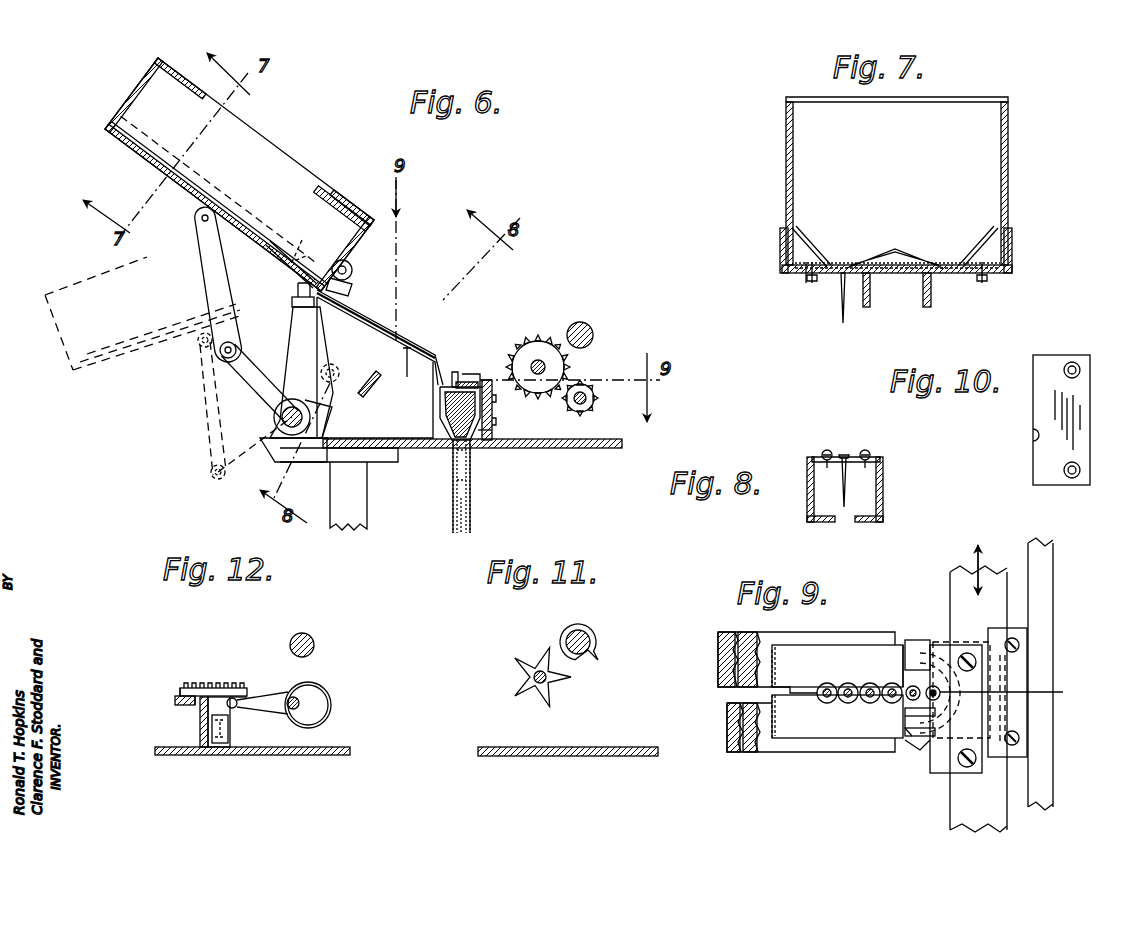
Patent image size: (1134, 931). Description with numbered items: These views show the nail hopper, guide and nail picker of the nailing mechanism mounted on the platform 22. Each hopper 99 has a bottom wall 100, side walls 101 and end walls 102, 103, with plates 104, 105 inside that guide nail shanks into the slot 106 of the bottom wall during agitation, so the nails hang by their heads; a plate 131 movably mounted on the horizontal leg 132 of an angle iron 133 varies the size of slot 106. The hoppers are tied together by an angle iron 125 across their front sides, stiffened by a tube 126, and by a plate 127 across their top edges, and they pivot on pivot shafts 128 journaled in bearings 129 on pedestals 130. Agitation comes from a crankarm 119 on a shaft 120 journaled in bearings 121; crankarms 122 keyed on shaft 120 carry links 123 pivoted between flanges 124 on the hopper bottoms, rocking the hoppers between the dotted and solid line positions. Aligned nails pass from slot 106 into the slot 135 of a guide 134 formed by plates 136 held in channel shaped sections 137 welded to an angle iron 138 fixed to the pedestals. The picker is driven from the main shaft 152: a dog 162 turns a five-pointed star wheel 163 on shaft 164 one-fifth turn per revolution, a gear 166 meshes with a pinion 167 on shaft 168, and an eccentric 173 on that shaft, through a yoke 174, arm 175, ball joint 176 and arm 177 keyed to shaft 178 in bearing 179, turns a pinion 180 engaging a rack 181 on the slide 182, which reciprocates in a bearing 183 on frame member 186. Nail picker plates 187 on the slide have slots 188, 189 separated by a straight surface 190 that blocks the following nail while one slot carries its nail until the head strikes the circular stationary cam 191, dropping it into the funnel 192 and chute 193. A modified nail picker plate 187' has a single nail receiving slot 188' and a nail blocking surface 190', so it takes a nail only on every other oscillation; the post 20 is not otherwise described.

In FIG. 6, the post 20 is at (367, 505).
In FIG. 6, the platform 22 is at (612, 448).
In FIG. 12, the platform 22 is at (334, 755).
In FIG. 11, the platform 22 is at (560, 756).
In FIG. 6, the hopper 99 is at (305, 150).
In FIG. 7, the hopper 99 is at (1010, 188).
In FIG. 7, the bottom wall 100 is at (935, 278).
In FIG. 7, the side walls 101 is at (786, 168).
In FIG. 6, the end wall 102 is at (350, 226).
In FIG. 6, the end wall 103 is at (137, 88).
In FIG. 7, the plate 104 is at (896, 248).
In FIG. 7, the plate 105 is at (820, 246).
In FIG. 7, the slot 106 is at (838, 275).
In FIG. 6, the crankarm 119 is at (316, 378).
In FIG. 6, the shaft 120 is at (272, 415).
In FIG. 6, the bearings 121 is at (332, 420).
In FIG. 6, the crankarm 122 is at (228, 360).
In FIG. 6, the link 123 is at (203, 262).
In FIG. 6, the flanges 124 is at (118, 135).
In FIG. 7, the flanges 124 is at (870, 307).
In FIG. 6, the angle iron 125 is at (350, 286).
In FIG. 6, the tube 126 is at (352, 264).
In FIG. 6, the plate 127 is at (365, 200).
In FIG. 6, the pivot shaft 128 is at (325, 236).
In FIG. 6, the bearing 129 is at (292, 294).
In FIG. 6, the pedestal 130 is at (298, 312).
In FIG. 7, the plate 131 is at (800, 270).
In FIG. 7, the horizontal leg 132 is at (806, 278).
In FIG. 7, the angle iron 133 is at (779, 254).
In FIG. 6, the guide 134 is at (425, 350).
In FIG. 7, the guide 134 is at (840, 300).
In FIG. 9, the guide 134 is at (866, 645).
In FIG. 9, the slot 135 is at (806, 685).
In FIG. 8, the plates 136 is at (820, 450).
In FIG. 9, the plates 136 is at (800, 645).
In FIG. 6, the channel shaped section 137 is at (336, 366).
In FIG. 8, the channel shaped section 137 is at (805, 505).
In FIG. 9, the channel shaped section 137 is at (762, 640).
In FIG. 6, the angle iron 138 is at (366, 396).
In FIG. 6, the main shaft 152 is at (590, 325).
In FIG. 12, the main shaft 152 is at (316, 622).
In FIG. 11, the main shaft 152 is at (587, 630).
In FIG. 11, the dog 162 is at (600, 660).
In FIG. 11, the star wheel 163 is at (518, 692).
In FIG. 6, the shaft 164 is at (543, 360).
In FIG. 11, the shaft 164 is at (548, 683).
In FIG. 6, the gear 166 is at (530, 340).
In FIG. 6, the pinion 167 is at (590, 375).
In FIG. 6, the shaft 168 is at (578, 408).
In FIG. 12, the shaft 168 is at (297, 697).
In FIG. 12, the eccentric 173 is at (331, 705).
In FIG. 12, the yoke 174 is at (322, 720).
In FIG. 12, the arm 175 is at (262, 700).
In FIG. 12, the ball joint 176 is at (228, 720).
In FIG. 12, the arm 177 is at (213, 705).
In FIG. 12, the shaft 178 is at (220, 686).
In FIG. 12, the bearing 179 is at (232, 747).
In FIG. 12, the pinion 180 is at (243, 688).
In FIG. 12, the rack 181 is at (185, 682).
In FIG. 6, the slide 182 is at (470, 372).
In FIG. 9, the slide 182 is at (950, 790).
In FIG. 12, the slide 182 is at (175, 698).
In FIG. 6, the bearing 183 is at (492, 407).
In FIG. 9, the bearing 183 is at (1020, 663).
In FIG. 6, the frame member 186 is at (494, 432).
In FIG. 9, the frame member 186 is at (1048, 732).
In FIG. 6, the nail picker plate 187 is at (441, 387).
In FIG. 9, the nail picker plate 187 is at (976, 728).
In FIG. 10, the nail picker plate 187' is at (1042, 430).
In FIG. 9, the slot 188 is at (901, 727).
In FIG. 10, the nail receiving slot 188' is at (1014, 449).
In FIG. 9, the slot 189 is at (1017, 691).
In FIG. 9, the straight surface 190 is at (897, 717).
In FIG. 10, the nail blocking surface 190' is at (1034, 420).
In FIG. 6, the circular stationary cam 191 is at (446, 360).
In FIG. 9, the circular stationary cam 191 is at (915, 748).
In FIG. 6, the funnel 192 is at (440, 428).
In FIG. 6, the chute 193 is at (472, 500).